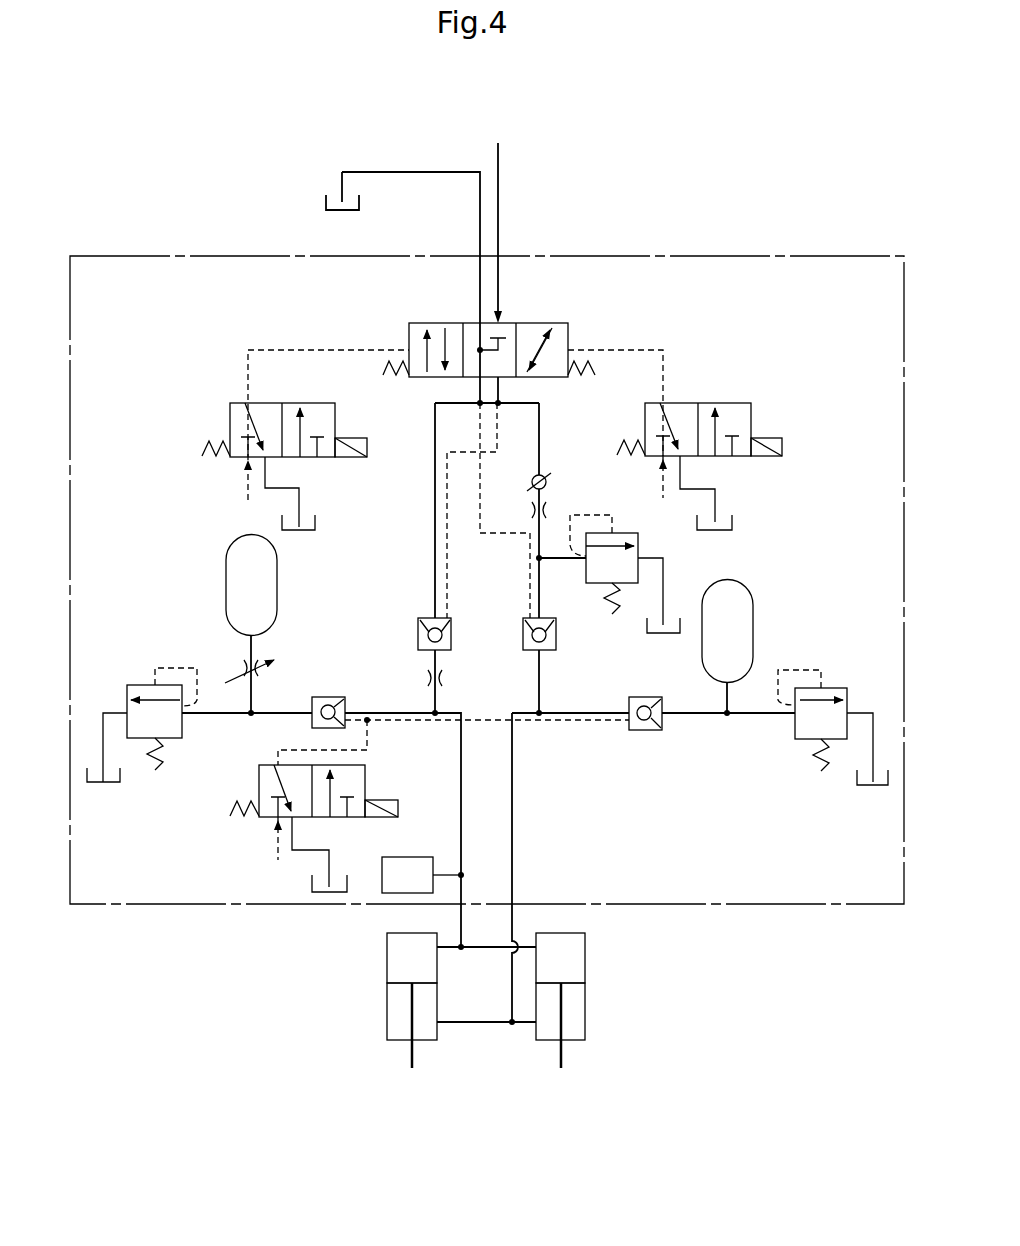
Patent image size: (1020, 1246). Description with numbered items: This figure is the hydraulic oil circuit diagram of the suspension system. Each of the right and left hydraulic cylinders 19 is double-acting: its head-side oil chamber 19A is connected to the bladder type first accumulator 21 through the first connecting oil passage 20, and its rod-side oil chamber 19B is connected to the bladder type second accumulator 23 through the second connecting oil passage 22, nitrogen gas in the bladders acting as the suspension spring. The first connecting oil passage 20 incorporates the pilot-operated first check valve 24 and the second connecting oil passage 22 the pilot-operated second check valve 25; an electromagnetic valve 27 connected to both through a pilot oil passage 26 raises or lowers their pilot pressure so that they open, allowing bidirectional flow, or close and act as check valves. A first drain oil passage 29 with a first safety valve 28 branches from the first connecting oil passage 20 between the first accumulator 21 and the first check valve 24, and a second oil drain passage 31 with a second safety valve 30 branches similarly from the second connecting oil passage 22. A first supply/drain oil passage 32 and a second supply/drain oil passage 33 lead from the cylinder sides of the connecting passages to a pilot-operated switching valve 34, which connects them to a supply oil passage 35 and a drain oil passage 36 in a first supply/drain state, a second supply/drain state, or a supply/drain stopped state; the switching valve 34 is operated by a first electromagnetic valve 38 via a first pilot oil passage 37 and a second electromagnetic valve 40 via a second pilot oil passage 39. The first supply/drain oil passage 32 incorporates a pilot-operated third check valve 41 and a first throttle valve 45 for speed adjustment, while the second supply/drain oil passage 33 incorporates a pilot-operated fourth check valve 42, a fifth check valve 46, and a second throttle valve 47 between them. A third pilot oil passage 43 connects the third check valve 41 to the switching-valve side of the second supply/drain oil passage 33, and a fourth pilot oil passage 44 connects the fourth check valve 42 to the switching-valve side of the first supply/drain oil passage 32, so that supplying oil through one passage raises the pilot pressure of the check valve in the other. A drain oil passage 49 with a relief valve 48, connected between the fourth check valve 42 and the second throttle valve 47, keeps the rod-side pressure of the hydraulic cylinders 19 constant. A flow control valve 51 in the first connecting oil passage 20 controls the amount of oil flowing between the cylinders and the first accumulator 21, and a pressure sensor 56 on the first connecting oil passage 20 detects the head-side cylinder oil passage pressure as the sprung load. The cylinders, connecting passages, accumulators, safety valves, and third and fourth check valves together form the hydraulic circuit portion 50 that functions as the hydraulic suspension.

The hydraulic cylinder 19 is at (486, 1000).
The head-side oil chamber 19A is at (387, 957).
The rod-side chamber 19B is at (486, 1025).
The first connecting oil passage 20 is at (461, 783).
The first accumulator 21 is at (277, 607).
The second connecting oil passage 22 is at (512, 800).
The second accumulator 23 is at (753, 622).
The first check valve 24 is at (328, 697).
The second check valve 25 is at (648, 697).
The pilot oil passage 26 is at (378, 728).
The electromagnetic valve 27 is at (259, 780).
The first safety valve 28 is at (140, 685).
The first drain oil passage 29 is at (212, 718).
The second safety valve 30 is at (847, 697).
The second oil drain passage 31 is at (756, 718).
The first supply/drain oil passage 32 is at (435, 440).
The second supply/drain oil passage 33 is at (539, 415).
The switching valve 34 is at (409, 337).
The supply oil passage 35 is at (498, 215).
The drain oil passage 36 is at (480, 225).
The first pilot oil passage 37 is at (667, 372).
The first electromagnetic valve 38 is at (751, 418).
The second pilot oil passage 39 is at (243, 362).
The second electromagnetic valve 40 is at (230, 418).
The third check valve 41 is at (418, 632).
The fourth check valve 42 is at (523, 632).
The third pilot oil passage 43 is at (447, 522).
The fourth pilot oil passage 44 is at (481, 490).
The first throttle valve 45 is at (445, 678).
The fifth check valve 46 is at (546, 480).
The second throttle valve 47 is at (548, 512).
The relief valve 48 is at (638, 540).
The drain oil passage 49 is at (556, 560).
The hydraulic circuit portion 50 is at (224, 626).
The flow control valve 51 is at (242, 668).
The pressure sensor 56 is at (423, 875).